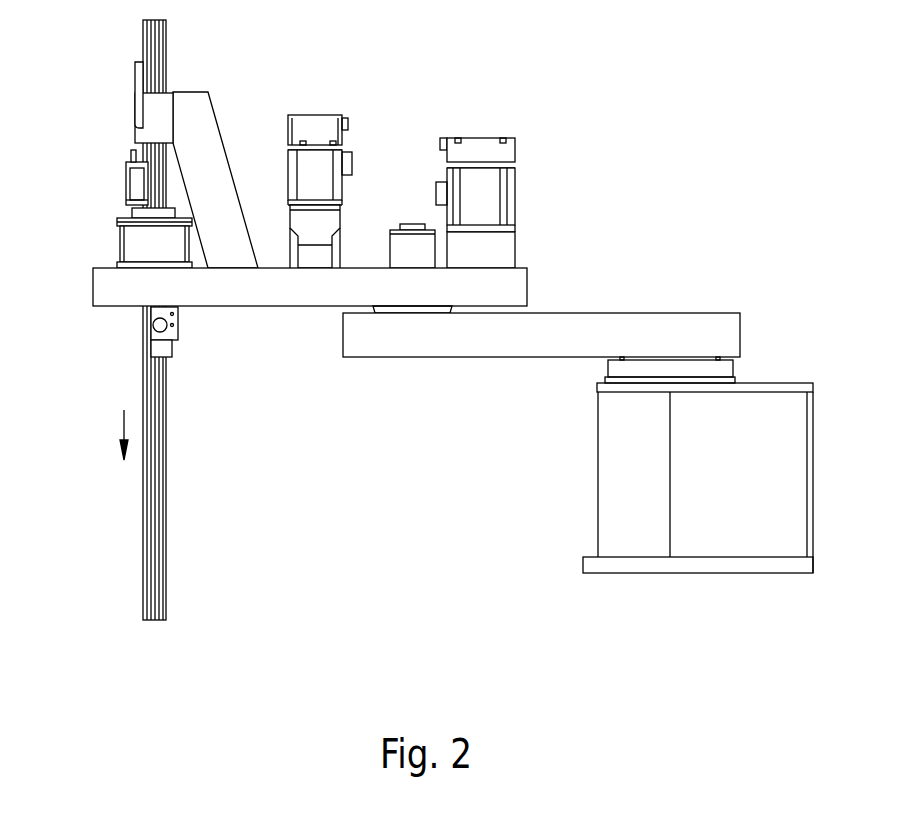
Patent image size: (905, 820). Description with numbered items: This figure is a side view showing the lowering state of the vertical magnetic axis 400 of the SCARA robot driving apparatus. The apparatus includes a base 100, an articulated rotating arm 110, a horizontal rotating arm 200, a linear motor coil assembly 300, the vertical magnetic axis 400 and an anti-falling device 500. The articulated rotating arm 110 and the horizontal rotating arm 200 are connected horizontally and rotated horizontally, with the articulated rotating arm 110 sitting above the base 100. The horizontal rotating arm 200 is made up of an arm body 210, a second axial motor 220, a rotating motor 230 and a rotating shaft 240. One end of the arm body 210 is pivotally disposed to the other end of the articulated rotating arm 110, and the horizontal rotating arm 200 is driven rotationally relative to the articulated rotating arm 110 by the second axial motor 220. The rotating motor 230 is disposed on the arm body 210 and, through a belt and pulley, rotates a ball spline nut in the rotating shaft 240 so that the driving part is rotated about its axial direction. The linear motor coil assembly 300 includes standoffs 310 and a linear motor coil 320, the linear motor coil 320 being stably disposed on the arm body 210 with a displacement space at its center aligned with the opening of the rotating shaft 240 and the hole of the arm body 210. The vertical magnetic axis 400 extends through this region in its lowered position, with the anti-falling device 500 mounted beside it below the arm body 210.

The base 100 is at (775, 398).
The articulated rotating arm 110 is at (648, 322).
The horizontal rotating arm 200 is at (316, 319).
The arm body 210 is at (395, 292).
The second axial motor 220 is at (475, 300).
The rotating motor 230 is at (310, 255).
The rotating shaft 240 is at (163, 215).
The linear motor coil assembly 300 is at (269, 147).
The standoffs 310 is at (205, 122).
The linear motor coil 320 is at (162, 107).
The vertical magnetic axis 400 is at (143, 490).
The anti-falling device 500 is at (172, 330).